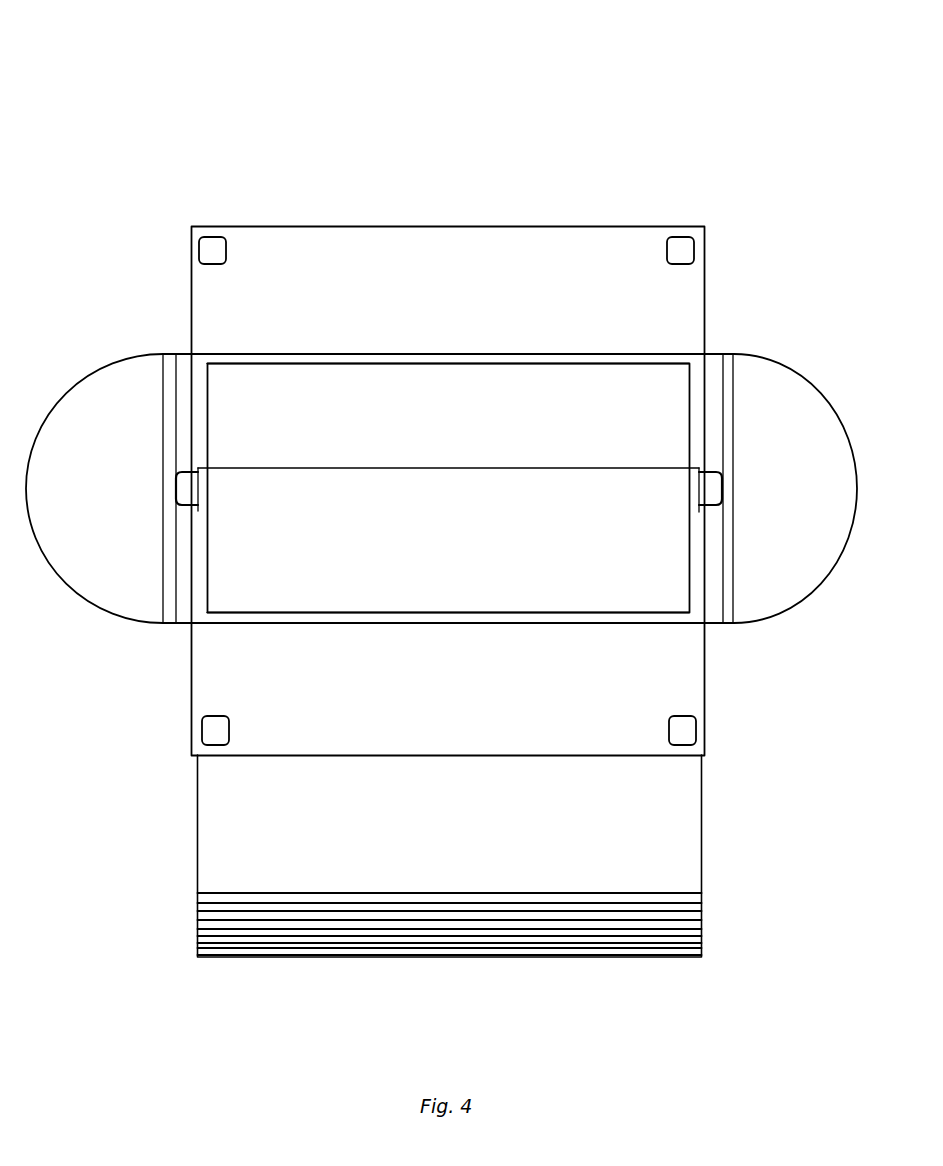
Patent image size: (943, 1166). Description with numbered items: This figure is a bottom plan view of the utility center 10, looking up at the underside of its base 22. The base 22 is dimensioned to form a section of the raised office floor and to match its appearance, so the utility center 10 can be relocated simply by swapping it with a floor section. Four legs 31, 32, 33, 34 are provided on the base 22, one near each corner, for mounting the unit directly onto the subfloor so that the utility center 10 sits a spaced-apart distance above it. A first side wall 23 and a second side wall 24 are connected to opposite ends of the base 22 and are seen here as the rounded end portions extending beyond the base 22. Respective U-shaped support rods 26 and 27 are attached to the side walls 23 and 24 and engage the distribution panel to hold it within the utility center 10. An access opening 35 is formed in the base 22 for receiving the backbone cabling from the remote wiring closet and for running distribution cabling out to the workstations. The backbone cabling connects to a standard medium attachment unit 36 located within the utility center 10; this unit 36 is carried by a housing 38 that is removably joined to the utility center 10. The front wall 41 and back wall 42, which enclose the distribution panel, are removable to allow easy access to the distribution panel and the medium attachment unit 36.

The utility center 10 is at (165, 130).
The base 22 is at (424, 252).
The first side wall 23 is at (55, 410).
The second side wall 24 is at (828, 405).
The U-shaped support rod 26 is at (172, 487).
The U-shaped support rod 27 is at (725, 490).
The leg 31 is at (210, 730).
The leg 32 is at (686, 733).
The leg 33 is at (680, 250).
The leg 34 is at (212, 250).
The access opening 35 is at (628, 372).
The medium attachment unit 36 is at (444, 571).
The housing 38 is at (212, 865).
The front wall 41 is at (478, 360).
The back wall 42 is at (500, 618).